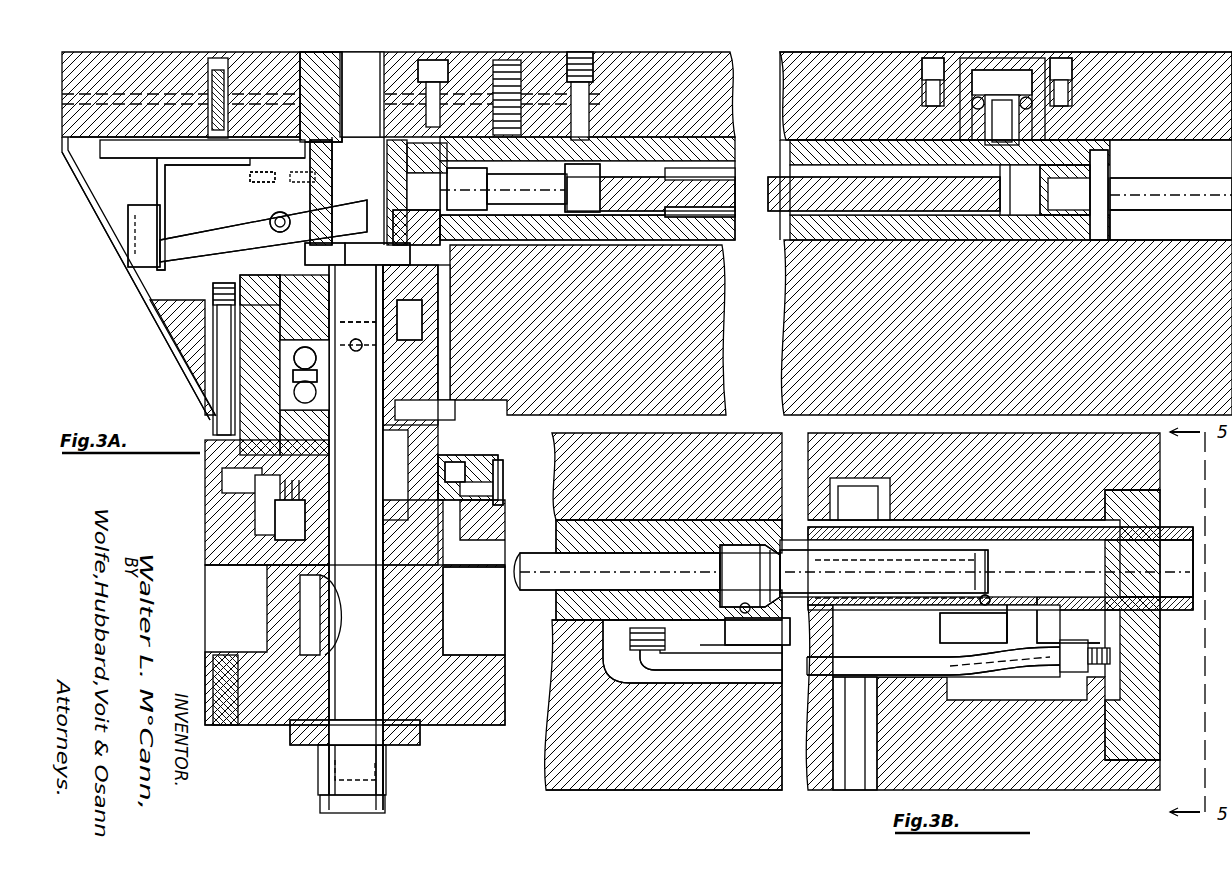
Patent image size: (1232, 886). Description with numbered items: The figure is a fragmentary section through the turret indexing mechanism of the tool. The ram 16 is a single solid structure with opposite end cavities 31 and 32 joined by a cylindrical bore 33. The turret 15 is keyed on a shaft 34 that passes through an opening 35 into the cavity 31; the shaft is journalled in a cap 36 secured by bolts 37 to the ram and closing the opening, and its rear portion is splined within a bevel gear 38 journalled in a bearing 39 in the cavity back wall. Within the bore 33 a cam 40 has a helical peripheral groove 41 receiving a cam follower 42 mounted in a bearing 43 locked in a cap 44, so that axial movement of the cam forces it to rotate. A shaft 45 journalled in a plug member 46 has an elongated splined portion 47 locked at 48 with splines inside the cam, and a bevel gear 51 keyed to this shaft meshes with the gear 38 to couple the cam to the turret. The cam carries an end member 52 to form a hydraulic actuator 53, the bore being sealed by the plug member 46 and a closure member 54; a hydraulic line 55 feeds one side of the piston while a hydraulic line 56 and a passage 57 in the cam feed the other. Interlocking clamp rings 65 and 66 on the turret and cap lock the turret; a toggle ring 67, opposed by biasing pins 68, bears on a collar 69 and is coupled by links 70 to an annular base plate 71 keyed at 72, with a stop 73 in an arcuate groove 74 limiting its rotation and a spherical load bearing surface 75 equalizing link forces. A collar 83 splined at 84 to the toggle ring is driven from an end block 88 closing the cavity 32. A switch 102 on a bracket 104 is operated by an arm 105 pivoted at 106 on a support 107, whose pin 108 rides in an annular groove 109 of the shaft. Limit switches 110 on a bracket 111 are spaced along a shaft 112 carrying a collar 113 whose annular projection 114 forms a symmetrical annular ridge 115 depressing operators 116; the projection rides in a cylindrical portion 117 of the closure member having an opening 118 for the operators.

In FIG. 3A, the turret 15 is at (482, 718).
In FIG. 3A, the ram 16 is at (1195, 63).
In FIG. 3B, the ram 16 is at (635, 783).
In FIG. 3A, the end cavity 31 is at (152, 292).
In FIG. 3B, the end cavity 32 is at (778, 680).
In FIG. 3A, the cylindrical bore 33 is at (1170, 245).
In FIG. 3B, the cylindrical bore 33 is at (545, 622).
In FIG. 3A, the shaft 34 is at (340, 712).
In FIG. 3A, the opening 35 is at (440, 383).
In FIG. 3A, the cap 36 is at (432, 530).
In FIG. 3A, the bolts 37 is at (498, 433).
In FIG. 3A, the bevel gear 38 is at (333, 80).
In FIG. 3A, the bearing 39 is at (438, 48).
In FIG. 3A, the cam 40 is at (728, 237).
In FIG. 3A, the helical peripheral groove 41 is at (997, 165).
In FIG. 3A, the cam follower 42 is at (1000, 110).
In FIG. 3A, the bearing 43 is at (1028, 90).
In FIG. 3A, the cap 44 is at (975, 58).
In FIG. 3A, the shaft 45 is at (728, 177).
In FIG. 3A, the plug member 46 is at (482, 210).
In FIG. 3A, the splined portion 47 is at (728, 210).
In FIG. 3A, the rotatable lock 48 is at (580, 188).
In FIG. 3A, the bevel gear 51 is at (440, 235).
In FIG. 3A, the end member 52 is at (1095, 172).
In FIG. 3A, the hydraulic actuator 53 is at (1112, 224).
In FIG. 3B, the closure member 54 is at (562, 540).
In FIG. 3B, the hydraulic line 55 is at (992, 668).
In FIG. 3A, the hydraulic line 56 is at (582, 80).
In FIG. 3A, the passage 57 is at (660, 160).
In FIG. 3A, the clamp ring 65 is at (500, 482).
In FIG. 3A, the clamp ring 66 is at (496, 447).
In FIG. 3A, the toggle ring 67 is at (415, 362).
In FIG. 3A, the biasing pins 68 is at (308, 504).
In FIG. 3A, the collar 69 is at (305, 252).
In FIG. 3A, the links 70 is at (310, 370).
In FIG. 3A, the annular base plate 71 is at (398, 425).
In FIG. 3A, the key 72 is at (398, 392).
In FIG. 3A, the stop 73 is at (360, 330).
In FIG. 3A, the arcuate groove 74 is at (318, 377).
In FIG. 3A, the spherical load bearing surface 75 is at (398, 454).
In FIG. 3A, the collar 83 is at (265, 278).
In FIG. 3A, the spline 84 is at (290, 278).
In FIG. 3B, the end block 88 is at (1145, 706).
In FIG. 3A, the switch 102 is at (136, 248).
In FIG. 3A, the bracket 104 is at (158, 190).
In FIG. 3A, the arm 105 is at (203, 226).
In FIG. 3A, the pivot 106 is at (280, 215).
In FIG. 3A, the support 107 is at (252, 166).
In FIG. 3A, the pin 108 is at (330, 204).
In FIG. 3A, the annular groove 109 is at (388, 240).
In FIG. 3B, the limit switches 110 is at (722, 640).
In FIG. 3B, the bracket 111 is at (878, 650).
In FIG. 3A, the shaft 112 is at (1212, 165).
In FIG. 3B, the shaft 112 is at (537, 588).
In FIG. 3B, the collar 113 is at (975, 548).
In FIG. 3B, the annular projection 114 is at (780, 545).
In FIG. 3B, the annular ridge 115 is at (770, 568).
In FIG. 3B, the operators 116 is at (990, 597).
In FIG. 3B, the cylindrical portion 117 is at (1192, 535).
In FIG. 3B, the opening 118 is at (1040, 612).